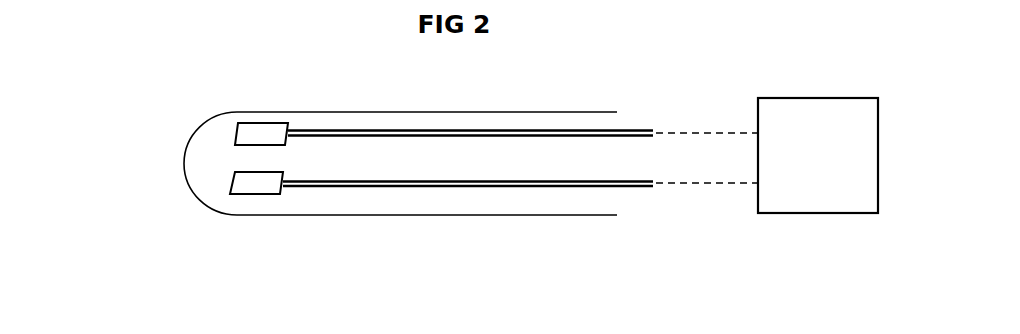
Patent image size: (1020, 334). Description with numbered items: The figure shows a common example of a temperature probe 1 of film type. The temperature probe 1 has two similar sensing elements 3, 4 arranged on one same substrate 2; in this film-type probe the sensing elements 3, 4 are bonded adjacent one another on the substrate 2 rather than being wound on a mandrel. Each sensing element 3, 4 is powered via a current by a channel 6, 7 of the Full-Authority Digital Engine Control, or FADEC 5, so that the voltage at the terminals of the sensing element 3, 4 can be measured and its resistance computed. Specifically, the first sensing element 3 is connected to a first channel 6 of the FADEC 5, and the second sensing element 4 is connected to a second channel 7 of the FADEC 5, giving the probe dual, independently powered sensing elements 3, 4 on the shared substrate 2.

The temperature probe 1 is at (128, 158).
The substrate 2 is at (387, 216).
The first sensing element 3 is at (260, 135).
The second sensing element 4 is at (253, 182).
The FADEC 5 is at (817, 213).
The first channel 6 is at (641, 130).
The second channel 7 is at (618, 185).